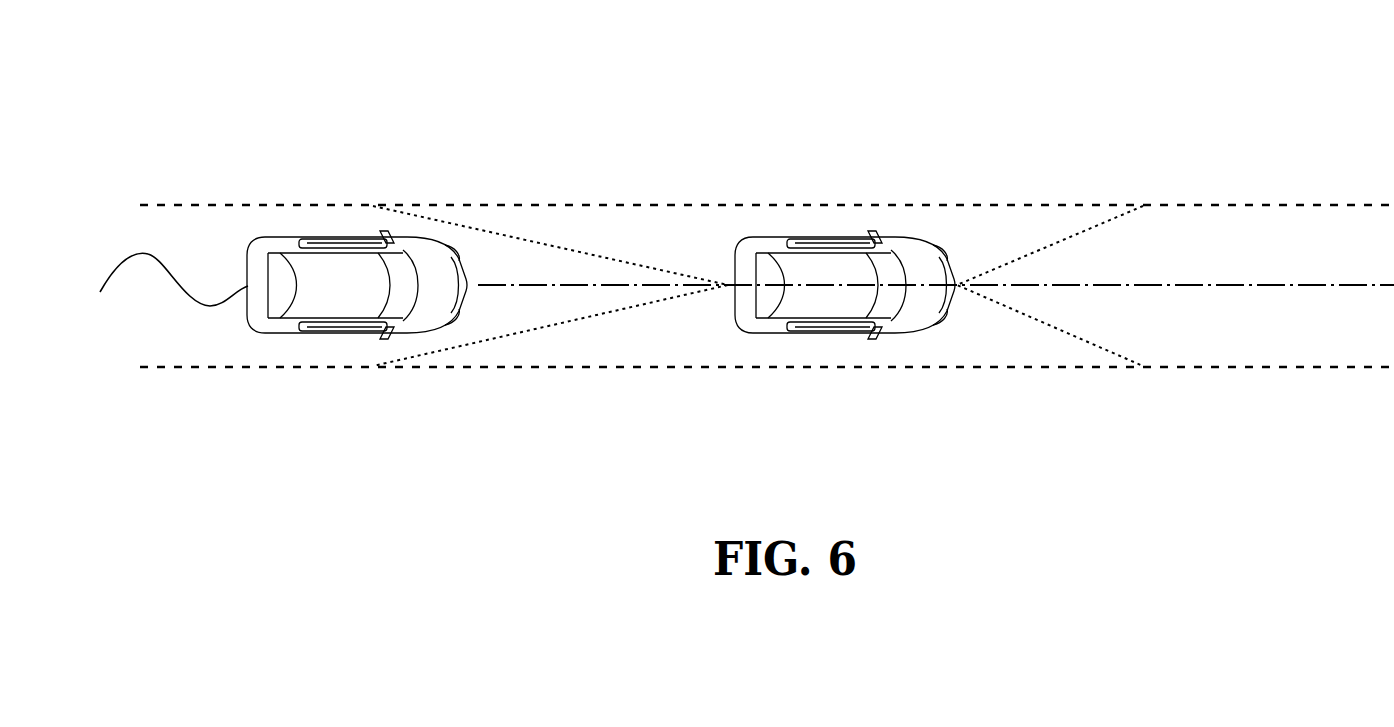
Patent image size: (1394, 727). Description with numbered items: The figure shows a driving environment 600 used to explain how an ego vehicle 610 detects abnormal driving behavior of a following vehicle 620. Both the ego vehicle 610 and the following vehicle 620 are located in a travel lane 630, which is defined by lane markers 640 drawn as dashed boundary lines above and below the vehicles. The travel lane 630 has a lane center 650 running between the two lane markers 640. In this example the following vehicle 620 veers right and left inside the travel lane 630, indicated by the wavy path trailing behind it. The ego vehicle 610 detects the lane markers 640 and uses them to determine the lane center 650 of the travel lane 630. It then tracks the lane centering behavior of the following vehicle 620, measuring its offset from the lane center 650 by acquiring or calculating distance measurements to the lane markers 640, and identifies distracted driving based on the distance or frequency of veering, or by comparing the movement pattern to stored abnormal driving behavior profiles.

The driving environment 600 is at (595, 60).
The ego vehicle 610 is at (893, 240).
The following vehicle 620 is at (325, 240).
The travel lane 630 is at (1312, 237).
The lane markers 640 is at (1195, 205).
The lane center 650 is at (1290, 285).